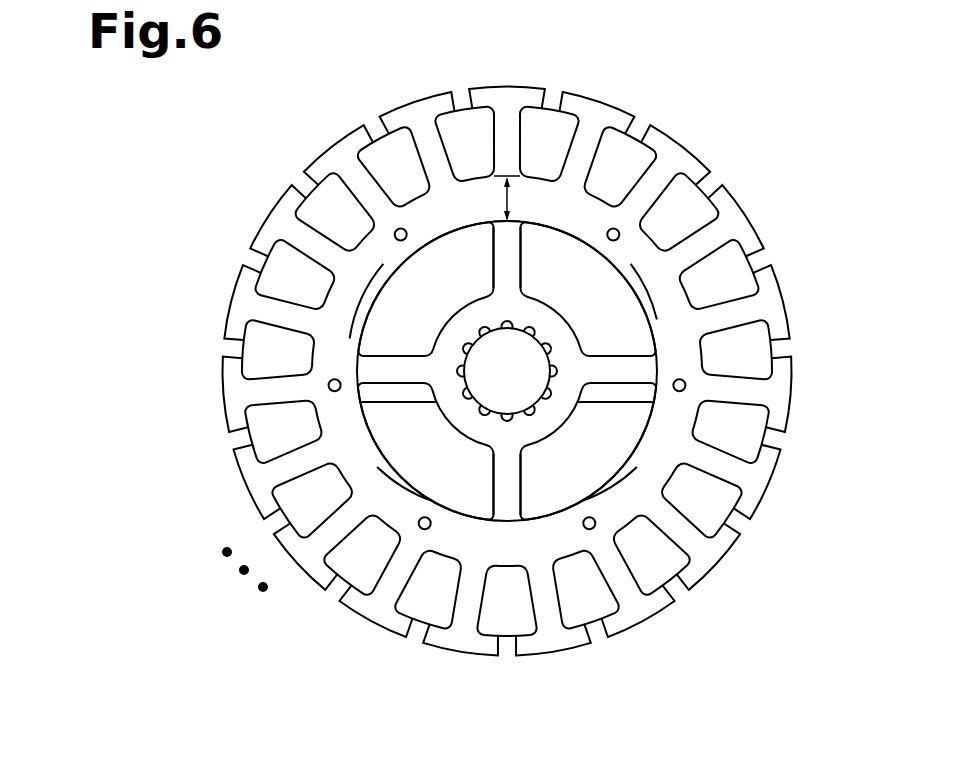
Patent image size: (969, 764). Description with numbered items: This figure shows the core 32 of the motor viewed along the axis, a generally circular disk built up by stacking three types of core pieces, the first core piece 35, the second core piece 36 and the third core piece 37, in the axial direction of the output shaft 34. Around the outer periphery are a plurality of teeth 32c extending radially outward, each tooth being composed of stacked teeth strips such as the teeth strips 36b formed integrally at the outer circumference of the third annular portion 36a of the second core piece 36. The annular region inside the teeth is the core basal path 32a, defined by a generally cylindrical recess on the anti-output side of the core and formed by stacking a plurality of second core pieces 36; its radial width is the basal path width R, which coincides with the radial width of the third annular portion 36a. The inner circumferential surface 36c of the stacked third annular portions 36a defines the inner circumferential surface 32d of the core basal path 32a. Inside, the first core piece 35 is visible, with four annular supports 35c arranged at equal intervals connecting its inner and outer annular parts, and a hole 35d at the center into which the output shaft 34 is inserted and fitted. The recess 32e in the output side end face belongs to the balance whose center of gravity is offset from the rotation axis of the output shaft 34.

The core 32 is at (752, 225).
The core basal path 32a is at (372, 278).
The teeth 32c is at (337, 155).
The inner circumferential surface 32d is at (434, 249).
The recess 32e is at (396, 403).
The output shaft 34 is at (511, 417).
The first core piece 35 is at (496, 277).
The annular supports 35c is at (395, 368).
The hole 35d is at (507, 331).
The second core piece 36 is at (648, 281).
The third annular portion 36a is at (604, 504).
The teeth strips 36b is at (258, 318).
The inner circumferential surface 36c is at (397, 463).
The third core piece 37 is at (624, 396).
The basal path width R is at (511, 198).